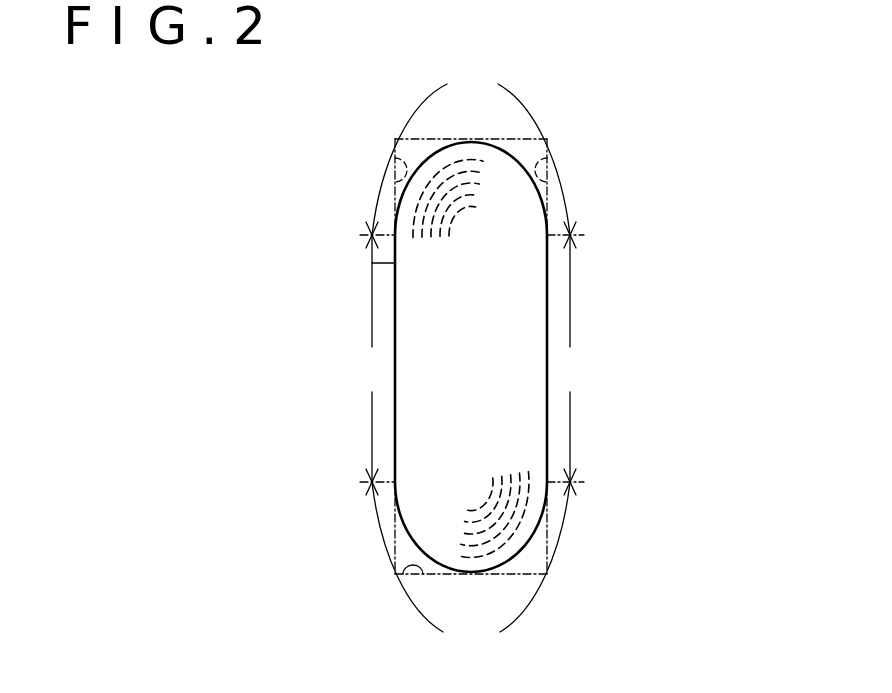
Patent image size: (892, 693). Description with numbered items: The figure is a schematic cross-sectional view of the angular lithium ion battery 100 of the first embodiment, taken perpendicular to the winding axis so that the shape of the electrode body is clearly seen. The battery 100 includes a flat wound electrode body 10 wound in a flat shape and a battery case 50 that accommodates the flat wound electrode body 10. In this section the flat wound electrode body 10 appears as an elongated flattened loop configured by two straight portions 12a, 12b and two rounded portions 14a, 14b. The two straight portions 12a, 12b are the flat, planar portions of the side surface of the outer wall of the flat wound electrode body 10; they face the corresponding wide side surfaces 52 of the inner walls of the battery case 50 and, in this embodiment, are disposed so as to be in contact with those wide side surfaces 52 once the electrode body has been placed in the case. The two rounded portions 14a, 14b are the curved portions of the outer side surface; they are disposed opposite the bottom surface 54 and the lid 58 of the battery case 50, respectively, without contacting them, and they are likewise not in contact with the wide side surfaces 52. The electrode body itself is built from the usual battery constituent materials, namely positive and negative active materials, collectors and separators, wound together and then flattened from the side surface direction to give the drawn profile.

The angular lithium ion battery 100 is at (605, 139).
The flat wound electrode body 10 is at (526, 548).
The straight portion 12a is at (370, 358).
The straight portion 12b is at (576, 358).
The rounded portion 14a is at (471, 567).
The rounded portion 14b is at (471, 149).
The battery case 50 is at (372, 263).
The wide side surface 52 is at (396, 160).
The bottom surface 54 is at (392, 588).
The lid 58 is at (424, 139).